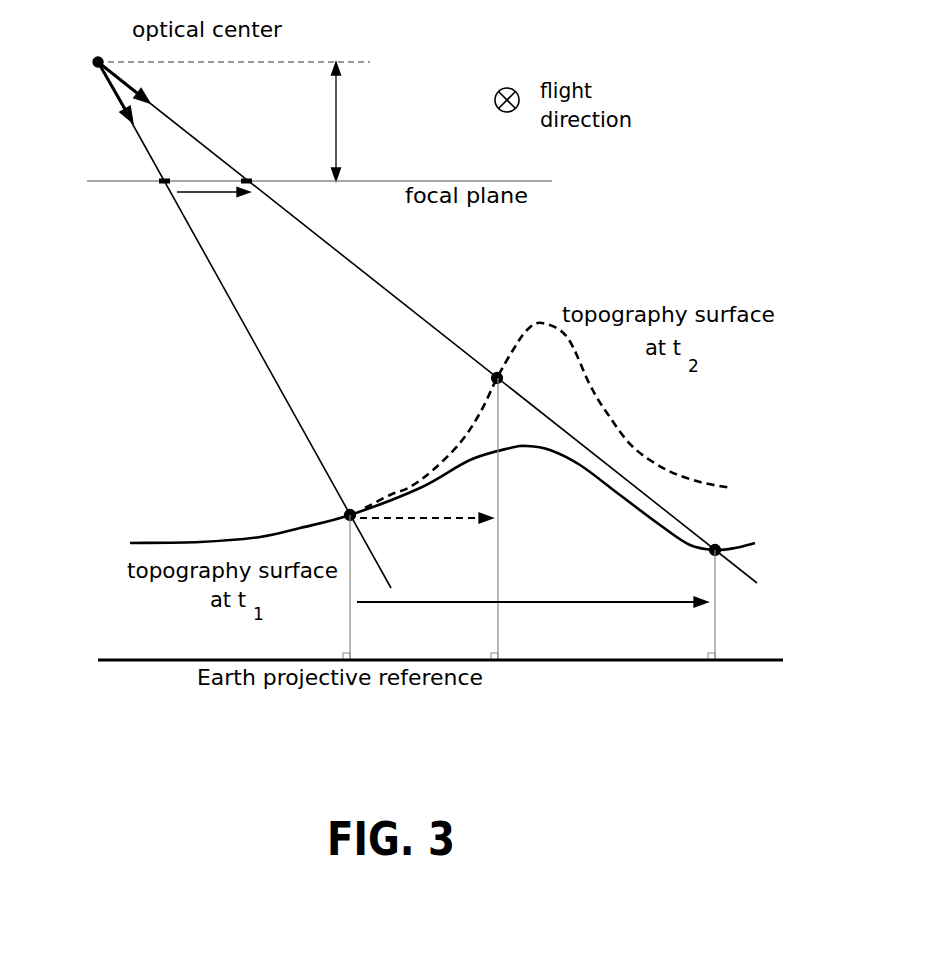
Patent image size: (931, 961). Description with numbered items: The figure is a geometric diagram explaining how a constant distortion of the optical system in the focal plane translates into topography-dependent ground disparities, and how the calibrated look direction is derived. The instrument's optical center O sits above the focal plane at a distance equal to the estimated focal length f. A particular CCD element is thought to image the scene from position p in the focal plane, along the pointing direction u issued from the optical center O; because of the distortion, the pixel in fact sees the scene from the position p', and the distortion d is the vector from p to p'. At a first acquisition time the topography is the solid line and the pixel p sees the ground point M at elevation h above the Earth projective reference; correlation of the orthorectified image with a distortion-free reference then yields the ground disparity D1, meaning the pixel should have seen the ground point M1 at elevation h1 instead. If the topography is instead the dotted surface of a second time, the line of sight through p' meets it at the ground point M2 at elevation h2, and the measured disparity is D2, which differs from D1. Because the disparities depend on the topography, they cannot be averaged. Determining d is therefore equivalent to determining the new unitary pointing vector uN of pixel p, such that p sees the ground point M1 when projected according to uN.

The optical center O is at (102, 45).
The pointing direction u is at (103, 117).
The calibrated look direction uN is at (187, 82).
The focal length f is at (343, 121).
The CCD element position in focal plane p is at (161, 198).
The distorted pixel position in focal plane p' is at (254, 198).
The focal plane distortion d is at (222, 203).
The ground point M is at (329, 506).
The corrected ground point M1 is at (721, 534).
The ground point on topography at t2 M2 is at (485, 354).
The elevation of ground point M h is at (355, 587).
The elevation of ground point M1 h1 is at (728, 605).
The elevation of ground point M2 h2 is at (509, 519).
The ground disparity at t1 D1 is at (603, 617).
The ground disparity at t2 D2 is at (435, 532).